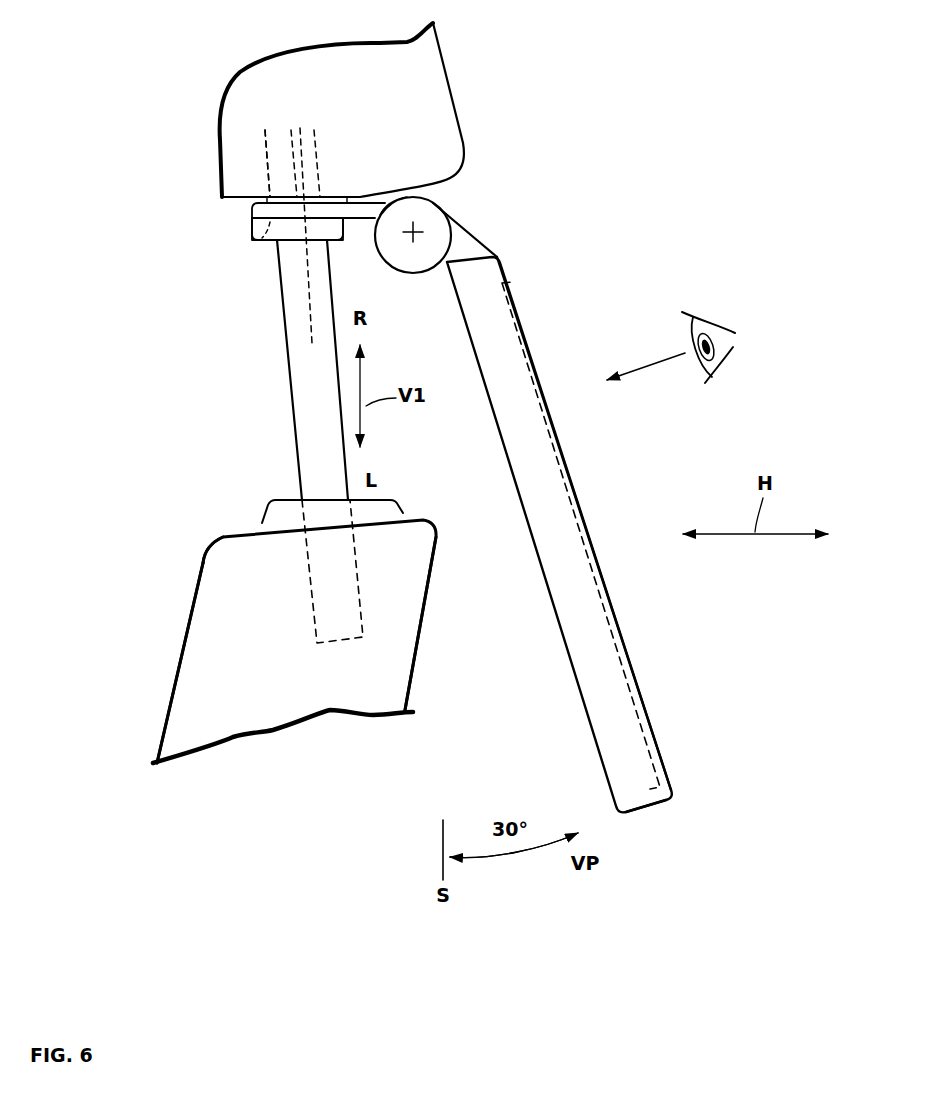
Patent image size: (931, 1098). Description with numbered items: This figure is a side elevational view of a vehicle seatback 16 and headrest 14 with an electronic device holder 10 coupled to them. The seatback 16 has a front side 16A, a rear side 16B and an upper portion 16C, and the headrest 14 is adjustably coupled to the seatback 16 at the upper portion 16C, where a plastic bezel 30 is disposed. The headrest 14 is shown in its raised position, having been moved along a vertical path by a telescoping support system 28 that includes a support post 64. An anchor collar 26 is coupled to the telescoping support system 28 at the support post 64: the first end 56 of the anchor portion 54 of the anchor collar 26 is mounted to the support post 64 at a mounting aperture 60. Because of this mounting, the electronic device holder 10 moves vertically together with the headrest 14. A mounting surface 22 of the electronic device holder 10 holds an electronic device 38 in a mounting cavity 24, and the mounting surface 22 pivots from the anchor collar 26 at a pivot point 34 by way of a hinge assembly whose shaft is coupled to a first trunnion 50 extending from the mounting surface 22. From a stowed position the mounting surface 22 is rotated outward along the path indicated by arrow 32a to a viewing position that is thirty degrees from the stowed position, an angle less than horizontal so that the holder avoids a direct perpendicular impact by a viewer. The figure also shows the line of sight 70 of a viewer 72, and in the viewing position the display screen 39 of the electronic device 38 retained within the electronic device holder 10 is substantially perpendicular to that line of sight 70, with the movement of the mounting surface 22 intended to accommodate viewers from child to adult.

The electronic device holder 10 is at (590, 220).
The headrest 14 is at (435, 87).
The seatback 16 is at (220, 695).
The front side 16A is at (182, 652).
The rear side 16B is at (427, 630).
The upper portion 16C is at (223, 537).
The mounting surface 22 is at (675, 712).
The mounting cavity 24 is at (615, 645).
The anchor collar 26 is at (240, 213).
The telescoping support system 28 is at (255, 168).
The plastic bezel 30 is at (263, 515).
The arrow 32a is at (509, 860).
The pivot point 34 is at (428, 234).
The electronic device 38 is at (619, 592).
The display screen 39 is at (583, 497).
The first trunnion 50 is at (423, 212).
The anchor portion 54 is at (225, 249).
The first end 56 is at (258, 230).
The mounting aperture 60 is at (265, 240).
The support post 64 is at (292, 396).
The line of sight 70 is at (660, 362).
The viewer 72 is at (724, 324).